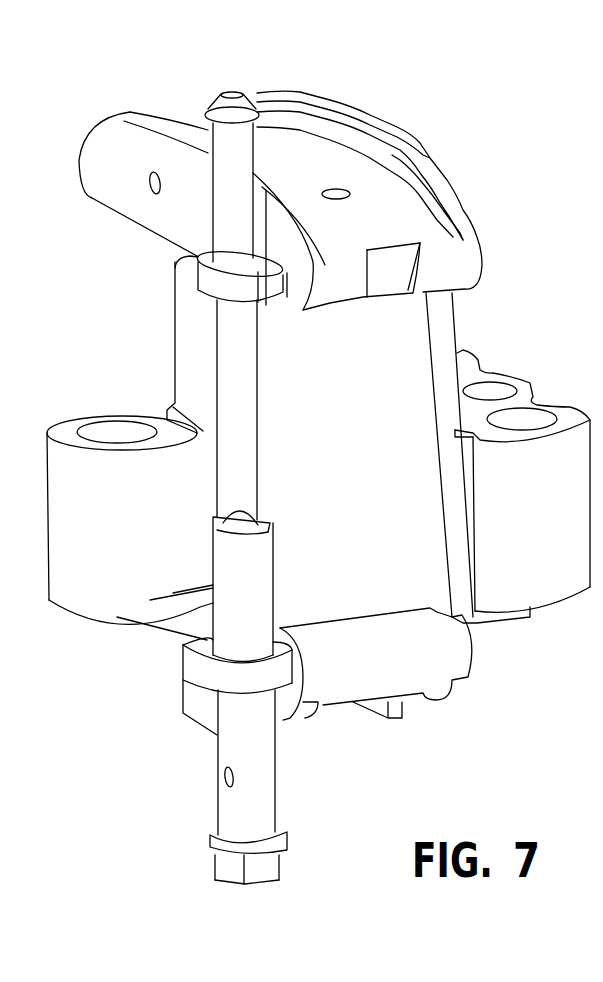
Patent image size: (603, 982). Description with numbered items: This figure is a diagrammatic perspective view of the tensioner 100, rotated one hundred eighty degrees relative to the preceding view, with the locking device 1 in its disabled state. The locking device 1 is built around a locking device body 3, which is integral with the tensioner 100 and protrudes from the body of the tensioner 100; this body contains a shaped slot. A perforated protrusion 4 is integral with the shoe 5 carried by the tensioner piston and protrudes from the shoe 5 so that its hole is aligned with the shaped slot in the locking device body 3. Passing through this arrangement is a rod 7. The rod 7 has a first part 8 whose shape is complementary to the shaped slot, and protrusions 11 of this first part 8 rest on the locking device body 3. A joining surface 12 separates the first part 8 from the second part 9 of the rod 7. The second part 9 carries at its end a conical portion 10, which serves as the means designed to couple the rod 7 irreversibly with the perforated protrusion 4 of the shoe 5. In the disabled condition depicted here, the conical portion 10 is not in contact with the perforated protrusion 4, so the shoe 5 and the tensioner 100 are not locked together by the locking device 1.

The tensioner 100 is at (527, 227).
The locking device 1 is at (143, 313).
The locking device body 3 is at (250, 683).
The perforated protrusion 4 is at (218, 283).
The shoe 5 is at (333, 162).
The rod 7 is at (210, 481).
The first part 8 is at (240, 622).
The second part 9 is at (238, 430).
The conical portion 10 is at (230, 90).
The protrusions 11 is at (263, 697).
The joining surface 12 is at (218, 520).